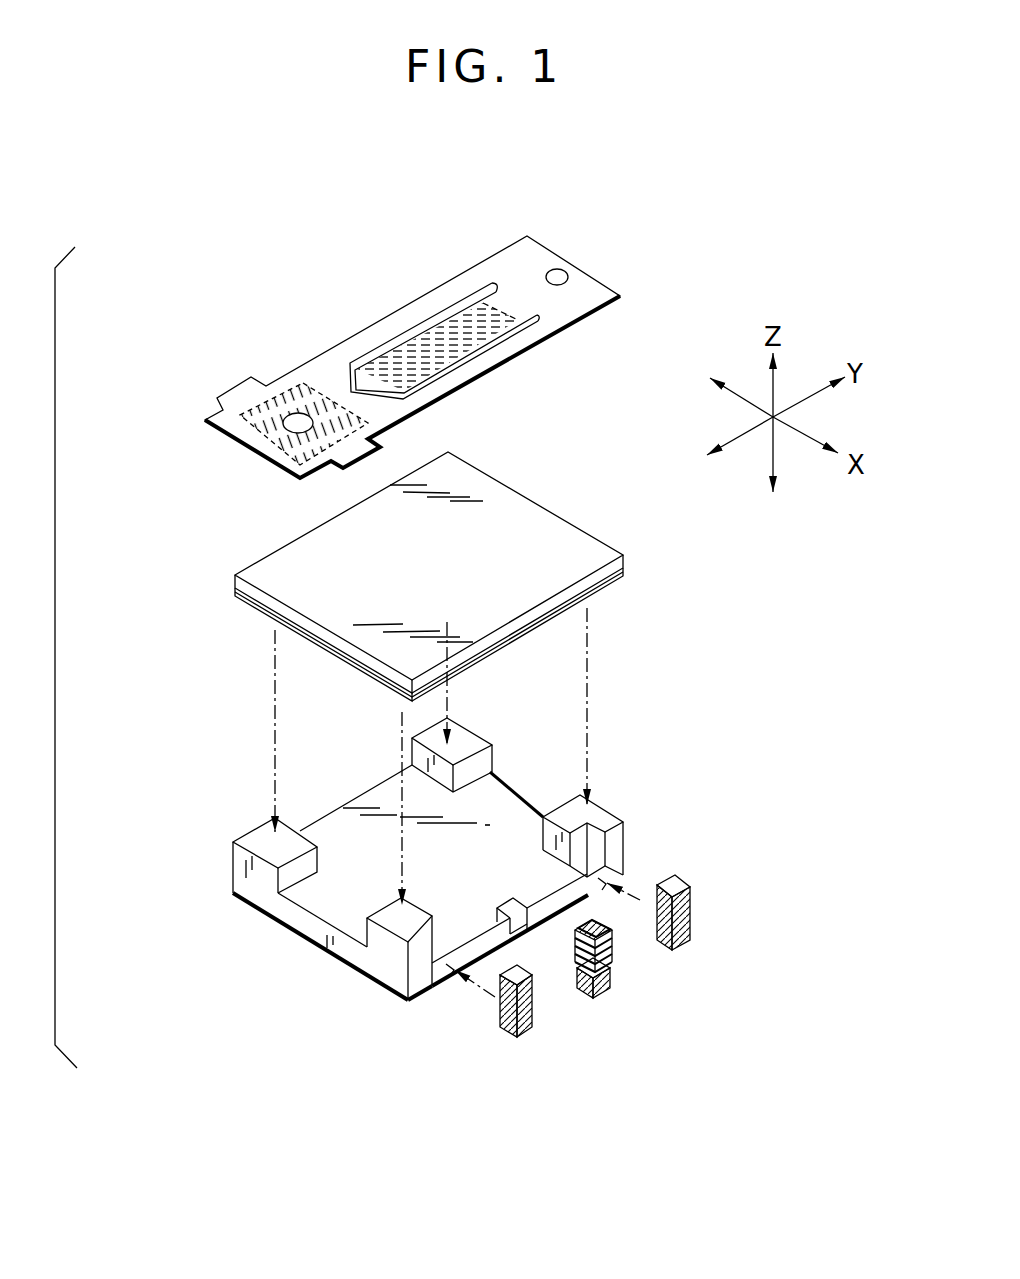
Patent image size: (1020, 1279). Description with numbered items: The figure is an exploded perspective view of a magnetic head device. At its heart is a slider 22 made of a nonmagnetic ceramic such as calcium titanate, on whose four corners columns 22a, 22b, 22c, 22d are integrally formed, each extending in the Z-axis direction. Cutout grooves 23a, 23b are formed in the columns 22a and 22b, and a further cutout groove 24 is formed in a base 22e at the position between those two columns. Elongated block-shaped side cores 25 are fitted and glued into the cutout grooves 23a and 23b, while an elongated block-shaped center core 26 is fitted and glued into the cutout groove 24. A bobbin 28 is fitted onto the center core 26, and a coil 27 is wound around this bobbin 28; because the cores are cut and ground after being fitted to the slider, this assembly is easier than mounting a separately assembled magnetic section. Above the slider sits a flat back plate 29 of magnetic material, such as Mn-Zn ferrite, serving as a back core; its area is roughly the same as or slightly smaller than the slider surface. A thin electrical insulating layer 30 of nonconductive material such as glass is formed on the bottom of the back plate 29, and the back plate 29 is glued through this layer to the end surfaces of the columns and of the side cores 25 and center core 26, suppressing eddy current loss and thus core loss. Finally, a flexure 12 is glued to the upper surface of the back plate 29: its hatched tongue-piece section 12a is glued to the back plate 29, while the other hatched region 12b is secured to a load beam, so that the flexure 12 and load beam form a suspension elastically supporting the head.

The flexure 12 is at (352, 332).
The tongue-piece section 12a is at (488, 336).
The hatching region 12b is at (222, 411).
The slider 22 is at (442, 893).
The column 22a is at (612, 818).
The column 22b is at (395, 927).
The column 22c is at (255, 833).
The column 22d is at (470, 742).
The base 22e is at (320, 893).
The cutout groove 23a is at (608, 893).
The cutout groove 23b is at (445, 985).
The cutout groove 24 is at (528, 935).
The side core 25 is at (693, 907).
The center core 26 is at (598, 995).
The coil 27 is at (614, 958).
The bobbin 28 is at (573, 935).
The back plate 29 is at (548, 538).
The electrical insulating layer 30 is at (607, 588).